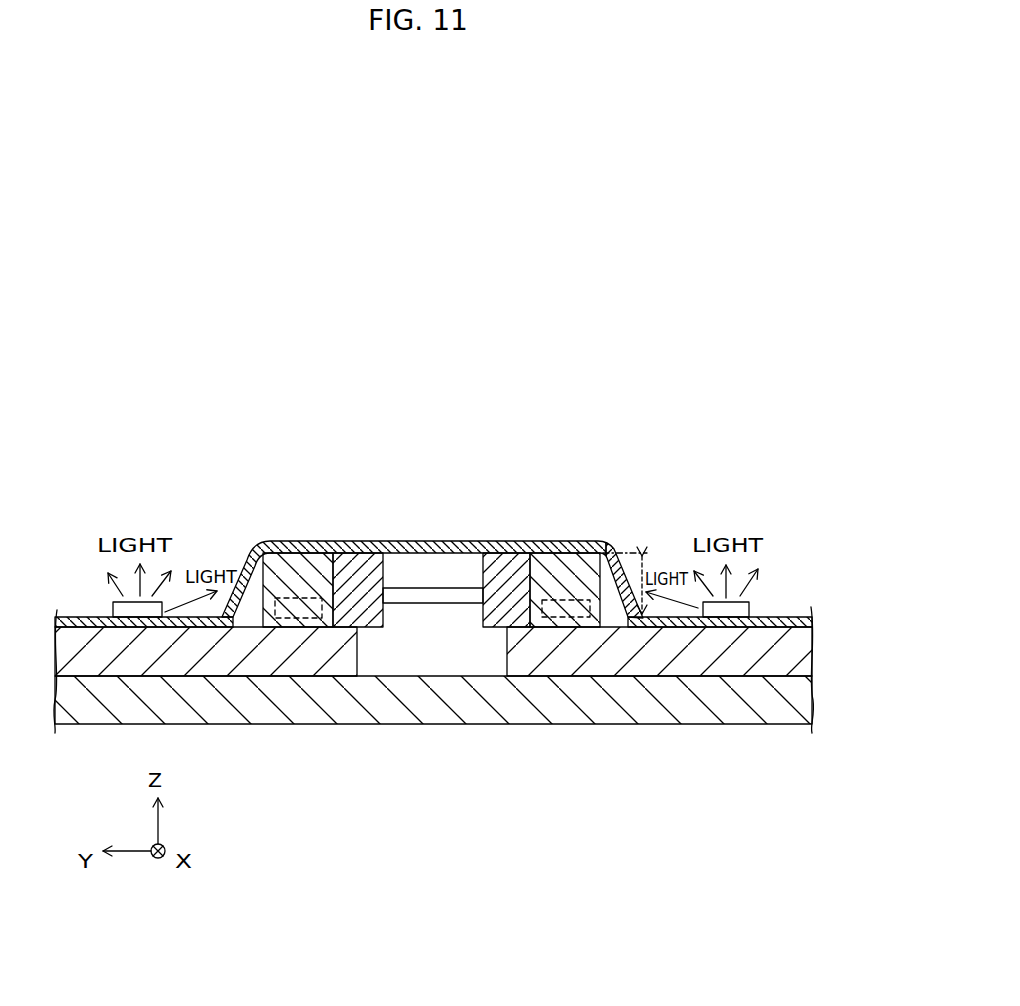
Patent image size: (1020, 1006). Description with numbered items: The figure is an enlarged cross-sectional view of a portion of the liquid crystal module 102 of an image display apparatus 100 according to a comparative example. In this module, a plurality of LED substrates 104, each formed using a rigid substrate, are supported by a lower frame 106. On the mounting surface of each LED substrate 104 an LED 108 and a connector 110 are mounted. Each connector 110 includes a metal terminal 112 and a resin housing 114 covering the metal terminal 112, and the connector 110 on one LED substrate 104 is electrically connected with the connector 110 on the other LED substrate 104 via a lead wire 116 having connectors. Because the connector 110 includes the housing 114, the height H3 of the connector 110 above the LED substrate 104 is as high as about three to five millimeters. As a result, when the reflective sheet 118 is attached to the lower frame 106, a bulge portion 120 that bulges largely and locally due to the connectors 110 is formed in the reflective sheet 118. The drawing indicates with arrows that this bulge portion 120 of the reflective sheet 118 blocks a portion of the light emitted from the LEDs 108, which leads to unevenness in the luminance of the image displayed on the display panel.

The image display apparatus 100 is at (691, 397).
The liquid crystal module 102 is at (721, 479).
The LED substrate 104 is at (278, 658).
The lower frame 106 is at (478, 708).
The LED 108 is at (163, 604).
The connector 110 is at (460, 521).
The metal terminal 112 is at (289, 598).
The housing 114 is at (273, 570).
The lead wire 116 is at (420, 588).
The reflective sheet 118 is at (788, 617).
The bulge portion 120 is at (514, 541).
The height H3 is at (645, 553).